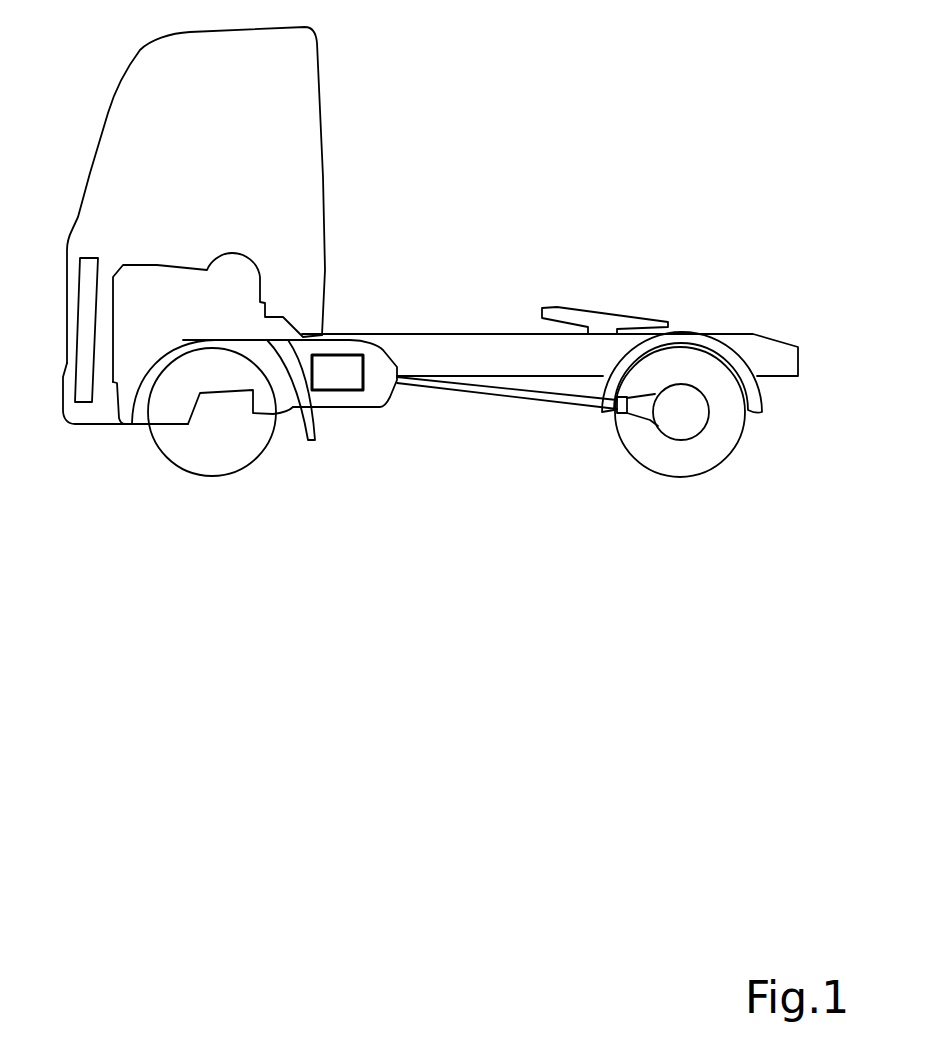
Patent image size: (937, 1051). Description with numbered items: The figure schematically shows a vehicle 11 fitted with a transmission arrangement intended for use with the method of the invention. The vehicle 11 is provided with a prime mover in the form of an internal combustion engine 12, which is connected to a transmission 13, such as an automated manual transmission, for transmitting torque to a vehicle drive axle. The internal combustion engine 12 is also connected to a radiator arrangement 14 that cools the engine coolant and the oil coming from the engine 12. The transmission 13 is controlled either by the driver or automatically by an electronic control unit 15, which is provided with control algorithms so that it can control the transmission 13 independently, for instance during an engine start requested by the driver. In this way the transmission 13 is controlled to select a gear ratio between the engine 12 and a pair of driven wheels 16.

The vehicle 11 is at (312, 120).
The internal combustion engine 12 is at (163, 265).
The transmission 13 is at (385, 377).
The radiator arrangement 14 is at (82, 390).
The electronic control unit 15 is at (345, 367).
The driven wheels 16 is at (708, 450).